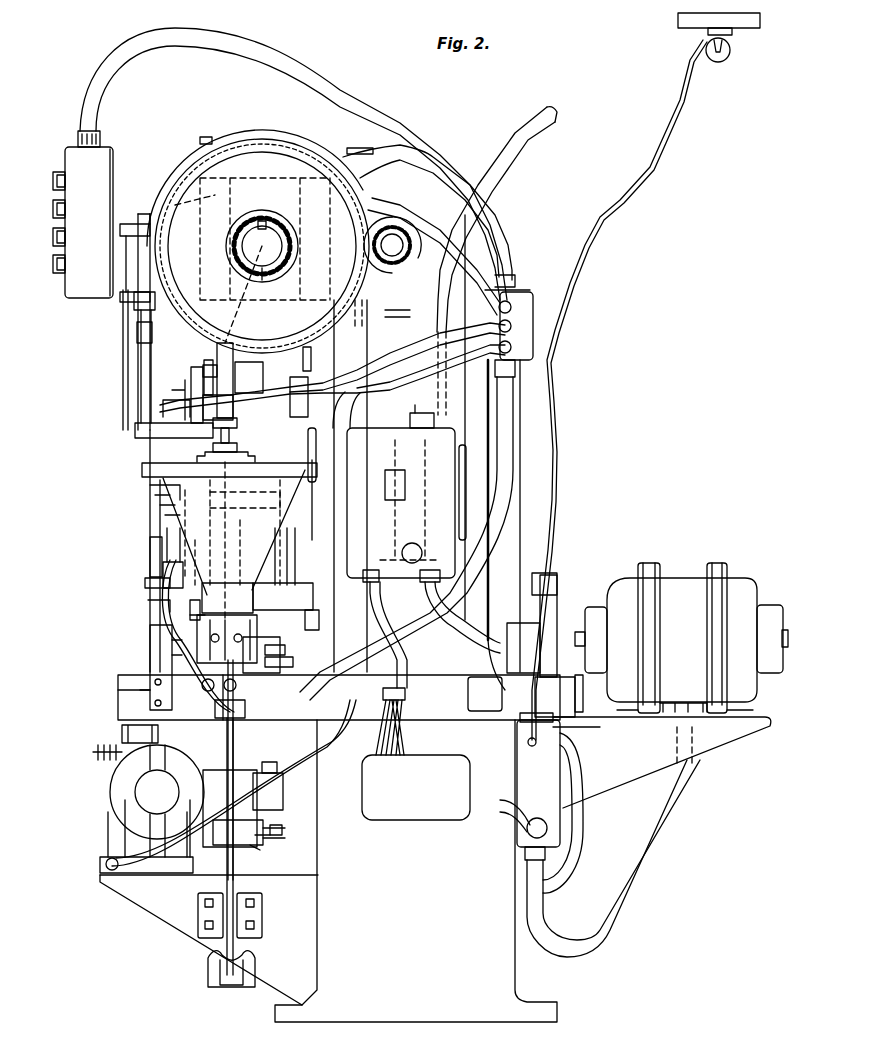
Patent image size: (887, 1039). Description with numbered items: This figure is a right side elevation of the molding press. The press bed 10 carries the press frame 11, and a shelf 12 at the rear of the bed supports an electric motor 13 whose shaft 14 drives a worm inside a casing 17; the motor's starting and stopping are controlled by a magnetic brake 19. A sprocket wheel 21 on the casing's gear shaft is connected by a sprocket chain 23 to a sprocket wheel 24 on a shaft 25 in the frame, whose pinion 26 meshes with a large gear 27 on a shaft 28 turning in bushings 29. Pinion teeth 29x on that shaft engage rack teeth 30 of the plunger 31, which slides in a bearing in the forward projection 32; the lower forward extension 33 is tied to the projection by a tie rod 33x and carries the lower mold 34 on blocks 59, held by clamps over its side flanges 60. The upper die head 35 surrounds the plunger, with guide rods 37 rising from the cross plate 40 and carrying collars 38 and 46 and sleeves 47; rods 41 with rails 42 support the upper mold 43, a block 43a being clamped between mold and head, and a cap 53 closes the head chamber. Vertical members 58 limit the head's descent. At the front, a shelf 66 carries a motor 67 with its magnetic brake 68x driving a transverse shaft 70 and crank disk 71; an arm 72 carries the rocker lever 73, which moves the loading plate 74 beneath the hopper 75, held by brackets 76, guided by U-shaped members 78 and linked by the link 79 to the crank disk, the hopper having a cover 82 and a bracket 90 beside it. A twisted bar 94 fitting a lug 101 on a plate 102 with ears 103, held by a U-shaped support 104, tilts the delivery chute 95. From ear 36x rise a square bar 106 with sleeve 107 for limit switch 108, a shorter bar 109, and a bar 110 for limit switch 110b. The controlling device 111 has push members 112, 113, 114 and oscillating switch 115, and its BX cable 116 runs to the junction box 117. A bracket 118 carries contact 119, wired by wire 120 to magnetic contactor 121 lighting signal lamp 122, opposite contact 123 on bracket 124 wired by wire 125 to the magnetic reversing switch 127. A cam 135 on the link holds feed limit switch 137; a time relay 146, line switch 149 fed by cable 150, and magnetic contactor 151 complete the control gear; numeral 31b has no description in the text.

The press bed 10 is at (452, 1013).
The press frame 11 is at (398, 147).
The shelf 12 is at (630, 775).
The electric motor 13 is at (684, 578).
The shaft 14 is at (578, 620).
The casing 17 is at (418, 505).
The magnetic brake 19 is at (552, 578).
The sprocket wheel 21 is at (418, 525).
The sprocket chain 23 is at (428, 450).
The sprocket wheel 24 is at (396, 304).
The shaft 25 is at (389, 230).
The pinion 26 is at (366, 310).
The large gear 27 is at (290, 226).
The shaft 28 is at (292, 279).
The bushings 29 is at (266, 276).
The pinion teeth 29x is at (265, 221).
The rack teeth 30 is at (255, 150).
The plunger 31 is at (203, 137).
The frame lower 31b is at (175, 613).
The forward projection 32 is at (204, 362).
The forward extension 33 is at (118, 702).
The tie rod 33x is at (148, 557).
The lower mold 34 is at (246, 640).
The upper die head 35 is at (142, 468).
The ear 36x is at (134, 430).
The guide rods 37 is at (215, 440).
The collars 38 is at (228, 447).
The cross plate 40 is at (205, 561).
The rods 41 is at (284, 556).
The rails 42 is at (299, 556).
The upper mold 43 is at (200, 605).
The block 43a is at (234, 532).
The collars 46 is at (237, 423).
The sleeves 47 is at (232, 350).
The cap 53 is at (175, 392).
The vertical members 58 is at (272, 654).
The blocks 59 is at (217, 690).
The side flanges 60 is at (287, 662).
The shelf 66 is at (160, 905).
The electric motor 67 is at (110, 790).
The magnetic brake 68x is at (100, 742).
The transverse shaft 70 is at (210, 840).
The crank disk 71 is at (238, 845).
The arm 72 is at (245, 945).
The rocker lever 73 is at (236, 880).
The loading plate 74 is at (212, 625).
The hopper 75 is at (302, 500).
The brackets 76 is at (300, 610).
The U-shaped members 78 is at (300, 625).
The link 79 is at (265, 858).
The closing cover 82 is at (150, 485).
The bracket 90 is at (234, 720).
The pivot member 94 is at (145, 584).
The delivery chute 95 is at (148, 600).
The lug 101 is at (150, 655).
The plate 102 is at (150, 640).
The ears 103 is at (150, 630).
The U-shaped support 104 is at (145, 690).
The square bar 106 is at (141, 370).
The sleeve 107 is at (137, 332).
The limit switch 108 is at (125, 278).
The shorter bar 109 is at (196, 372).
The bar 110 is at (263, 468).
The limit switch 110b is at (332, 313).
The controlling device 111 is at (108, 166).
The push member 112 is at (52, 176).
The push member 113 is at (52, 208).
The push member 114 is at (52, 236).
The oscillating switch member 115 is at (52, 272).
The BX cable 116 is at (100, 88).
The junction box 117 is at (534, 324).
The bracket 118 is at (160, 575).
The contact member 119 is at (163, 560).
The wire 120 is at (215, 708).
The magnetic contactor 121 is at (312, 621).
The signal lamp 122 is at (732, 50).
The contact member 123 is at (160, 515).
The bracket 124 is at (155, 505).
The wire 125 is at (150, 495).
The magnetic reversing switch 127 is at (560, 824).
The cam 135 is at (278, 840).
The feed limit switch 137 is at (282, 832).
The time relay 146 is at (412, 818).
The line switch 149 is at (392, 427).
The cable 150 is at (508, 162).
The magnetic contactor 151 is at (546, 392).